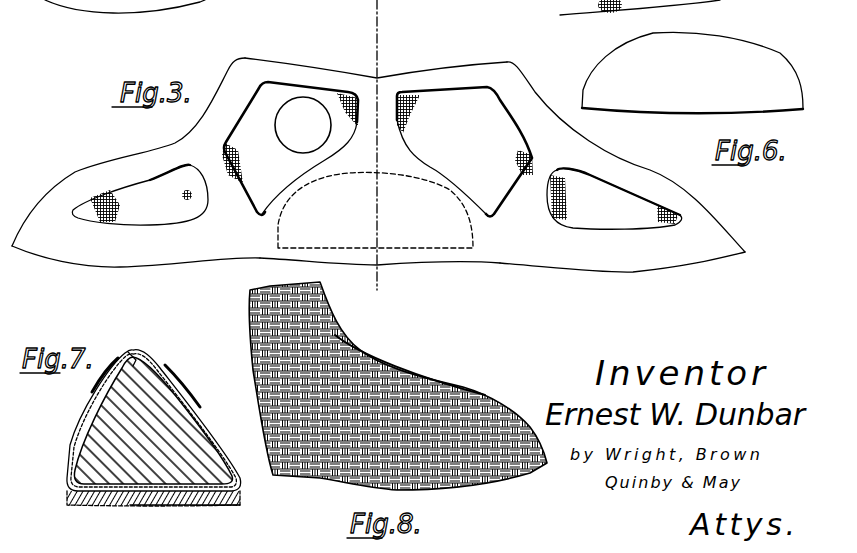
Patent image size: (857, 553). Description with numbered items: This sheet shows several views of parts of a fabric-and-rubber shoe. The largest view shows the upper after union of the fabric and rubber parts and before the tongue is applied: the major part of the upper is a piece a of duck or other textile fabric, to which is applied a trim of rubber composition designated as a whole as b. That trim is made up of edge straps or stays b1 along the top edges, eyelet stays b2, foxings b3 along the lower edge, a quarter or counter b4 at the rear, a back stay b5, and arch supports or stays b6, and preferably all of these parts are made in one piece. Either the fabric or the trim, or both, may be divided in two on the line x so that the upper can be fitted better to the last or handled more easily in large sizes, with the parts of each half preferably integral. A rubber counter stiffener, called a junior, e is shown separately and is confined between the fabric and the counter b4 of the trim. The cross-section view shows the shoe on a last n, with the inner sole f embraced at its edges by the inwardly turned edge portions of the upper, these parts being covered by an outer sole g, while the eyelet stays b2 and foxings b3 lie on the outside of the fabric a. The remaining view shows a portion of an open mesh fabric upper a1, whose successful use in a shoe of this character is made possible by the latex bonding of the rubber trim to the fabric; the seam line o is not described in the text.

In FIG. 3, the rubber composition trim b is at (378, 169).
In FIG. 3, the edge straps or stays b1 is at (280, 71).
In FIG. 3, the eyelet stays b2 is at (162, 158).
In FIG. 7, the eyelet stays b2 is at (92, 389).
In FIG. 3, the foxings b3 is at (143, 250).
In FIG. 7, the foxings b3 is at (67, 455).
In FIG. 3, the quarter or counter b4 is at (333, 220).
In FIG. 3, the back stay b5 is at (383, 113).
In FIG. 3, the arch supports or stays b6 is at (210, 173).
In FIG. 3, the dividing line x is at (376, 155).
In FIG. 3, the counter stiffener or junior e is at (457, 240).
In FIG. 6, the counter stiffener or junior e is at (740, 60).
In FIG. 7, the fabric upper piece a is at (83, 423).
In FIG. 8, the open mesh fabric upper a1 is at (258, 333).
In FIG. 7, the last n is at (133, 363).
In FIG. 7, the inner sole f is at (117, 494).
In FIG. 7, the outer sole g is at (193, 510).
In FIG. 8, the seam line o is at (390, 360).